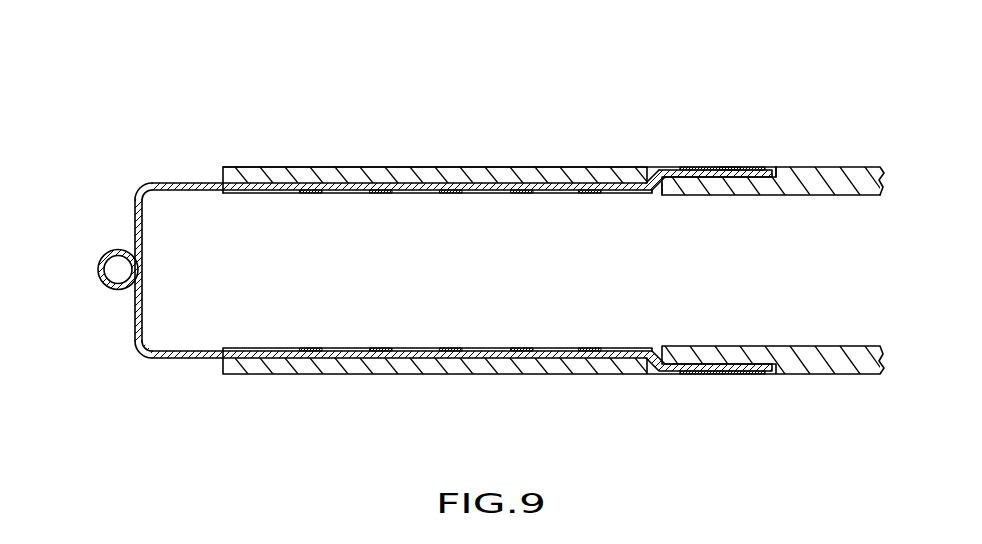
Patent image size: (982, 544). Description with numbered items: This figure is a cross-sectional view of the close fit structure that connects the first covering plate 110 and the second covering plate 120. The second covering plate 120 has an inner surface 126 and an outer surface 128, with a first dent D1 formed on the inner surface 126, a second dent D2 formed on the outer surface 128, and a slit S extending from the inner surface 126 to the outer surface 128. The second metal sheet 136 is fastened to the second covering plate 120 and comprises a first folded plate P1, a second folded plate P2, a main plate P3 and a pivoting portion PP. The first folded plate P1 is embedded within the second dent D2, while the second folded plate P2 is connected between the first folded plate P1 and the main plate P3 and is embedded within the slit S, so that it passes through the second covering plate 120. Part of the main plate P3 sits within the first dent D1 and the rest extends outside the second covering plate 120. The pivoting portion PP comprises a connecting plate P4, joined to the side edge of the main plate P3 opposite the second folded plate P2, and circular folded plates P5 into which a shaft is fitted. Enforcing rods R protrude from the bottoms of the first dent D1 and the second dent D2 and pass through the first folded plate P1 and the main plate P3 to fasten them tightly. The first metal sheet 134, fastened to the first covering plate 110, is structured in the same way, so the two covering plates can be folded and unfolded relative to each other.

The second metal sheet 136 is at (700, 82).
The pivoting portion PP is at (172, 127).
The main plate P3 is at (197, 183).
The connecting plate P4 is at (127, 222).
The circular folded plates P5 is at (105, 249).
The second folded plate P2 is at (647, 177).
The first folded plate P1 is at (672, 170).
The second dent D2 is at (714, 166).
The enforcing rods R is at (735, 170).
The outer surface 128 is at (818, 164).
The inner surface 126 is at (783, 196).
The second covering plate 120 is at (744, 195).
The slit S is at (654, 194).
The first dent D1 is at (419, 194).
The first covering plate 110 is at (744, 347).
The first metal sheet 134 is at (190, 358).